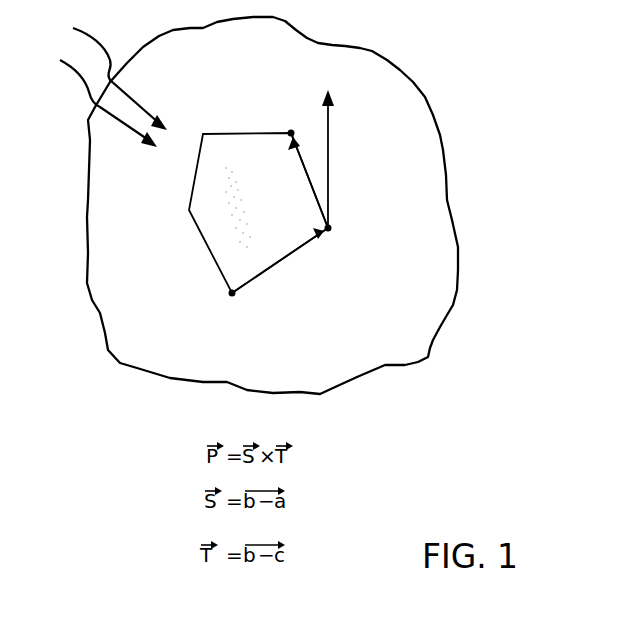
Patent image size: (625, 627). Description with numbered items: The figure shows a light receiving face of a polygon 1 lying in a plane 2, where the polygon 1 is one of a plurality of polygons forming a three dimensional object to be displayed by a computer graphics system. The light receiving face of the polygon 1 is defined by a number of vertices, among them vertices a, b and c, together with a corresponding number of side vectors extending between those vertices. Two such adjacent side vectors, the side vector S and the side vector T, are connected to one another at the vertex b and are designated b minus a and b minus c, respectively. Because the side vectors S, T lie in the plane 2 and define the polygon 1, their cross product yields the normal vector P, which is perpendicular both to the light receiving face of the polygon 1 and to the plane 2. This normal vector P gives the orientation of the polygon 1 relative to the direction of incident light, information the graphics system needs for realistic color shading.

The polygon 1 is at (200, 232).
The plane 2 is at (438, 257).
The vertex a is at (231, 294).
The vertex b is at (331, 230).
The vertex c is at (290, 132).
The side vector S is at (263, 272).
The side vector T is at (313, 192).
The normal vector P is at (330, 150).